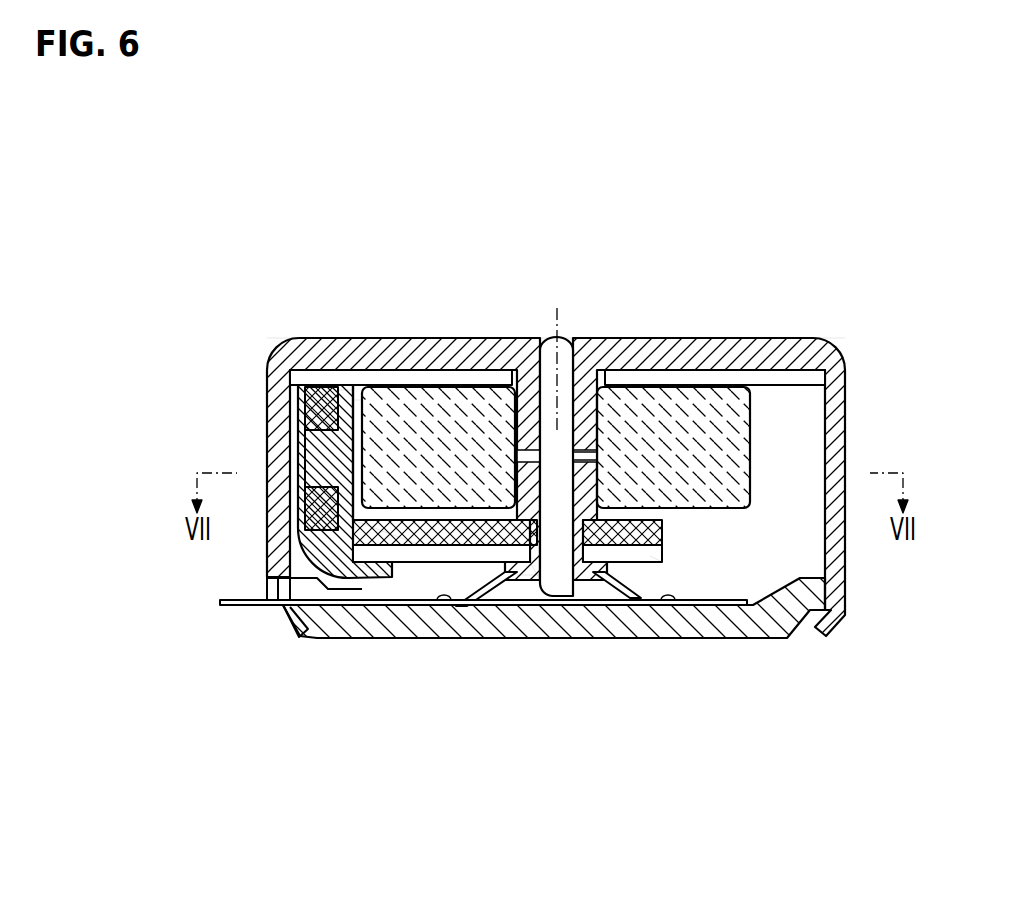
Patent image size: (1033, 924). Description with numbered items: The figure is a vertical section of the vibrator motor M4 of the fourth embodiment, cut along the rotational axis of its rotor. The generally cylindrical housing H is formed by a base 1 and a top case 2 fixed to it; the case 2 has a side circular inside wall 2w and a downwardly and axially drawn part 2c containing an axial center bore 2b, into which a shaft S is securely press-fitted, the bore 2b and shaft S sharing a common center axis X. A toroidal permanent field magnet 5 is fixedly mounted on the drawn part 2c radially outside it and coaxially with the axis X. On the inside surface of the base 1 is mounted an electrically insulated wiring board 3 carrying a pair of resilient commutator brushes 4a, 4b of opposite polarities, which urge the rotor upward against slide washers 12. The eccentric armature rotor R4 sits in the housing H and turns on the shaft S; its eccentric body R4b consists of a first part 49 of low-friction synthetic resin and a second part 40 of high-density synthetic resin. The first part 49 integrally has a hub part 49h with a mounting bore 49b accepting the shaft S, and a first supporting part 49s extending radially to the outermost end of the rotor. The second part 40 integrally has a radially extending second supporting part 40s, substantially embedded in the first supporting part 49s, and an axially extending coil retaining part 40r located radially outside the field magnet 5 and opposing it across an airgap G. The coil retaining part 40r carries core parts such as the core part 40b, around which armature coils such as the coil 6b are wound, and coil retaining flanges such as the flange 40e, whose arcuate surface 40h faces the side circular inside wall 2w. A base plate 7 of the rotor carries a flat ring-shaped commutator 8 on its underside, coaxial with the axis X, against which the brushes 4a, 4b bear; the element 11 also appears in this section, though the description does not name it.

The base 1 is at (742, 622).
The top case 2 is at (795, 352).
The center bore 2b is at (585, 400).
The downwardly drawn part 2c is at (607, 378).
The side circular inside wall 2w is at (290, 546).
The wiring board 3 is at (702, 602).
The commutator brush 4a is at (498, 583).
The commutator brush 4b is at (634, 604).
The permanent field magnet 5 is at (428, 400).
The armature coil 6b is at (317, 392).
The base plate 7 is at (377, 550).
The commutator 8 is at (660, 558).
The holder plate 11 is at (402, 550).
The slide washers 12 is at (597, 460).
The second part 40 is at (320, 566).
The core part 40b is at (316, 443).
The coil retaining flange 40e is at (312, 392).
The arcuate surface 40h is at (308, 463).
The coil retaining part 40r is at (350, 405).
The second supporting part 40s is at (463, 548).
The first part 49 is at (305, 563).
The first supporting part 49s is at (482, 548).
The hub part 49h is at (548, 583).
The mounting bore 49b is at (543, 523).
The airgap G is at (358, 412).
The housing H is at (849, 393).
The vibrator motor M4 is at (270, 340).
The eccentric armature rotor R4 is at (343, 388).
The eccentric body R4b is at (533, 584).
The shaft S is at (545, 350).
The center axis X is at (557, 352).